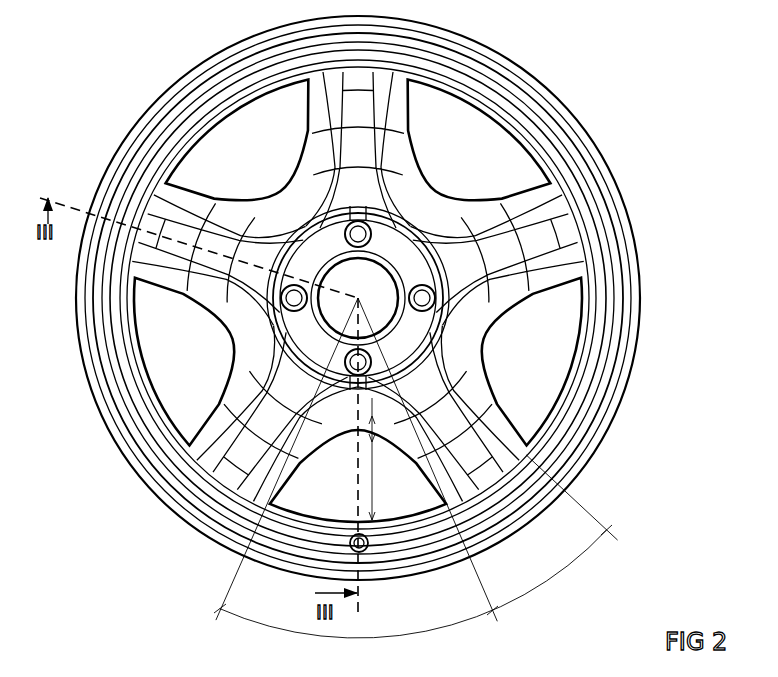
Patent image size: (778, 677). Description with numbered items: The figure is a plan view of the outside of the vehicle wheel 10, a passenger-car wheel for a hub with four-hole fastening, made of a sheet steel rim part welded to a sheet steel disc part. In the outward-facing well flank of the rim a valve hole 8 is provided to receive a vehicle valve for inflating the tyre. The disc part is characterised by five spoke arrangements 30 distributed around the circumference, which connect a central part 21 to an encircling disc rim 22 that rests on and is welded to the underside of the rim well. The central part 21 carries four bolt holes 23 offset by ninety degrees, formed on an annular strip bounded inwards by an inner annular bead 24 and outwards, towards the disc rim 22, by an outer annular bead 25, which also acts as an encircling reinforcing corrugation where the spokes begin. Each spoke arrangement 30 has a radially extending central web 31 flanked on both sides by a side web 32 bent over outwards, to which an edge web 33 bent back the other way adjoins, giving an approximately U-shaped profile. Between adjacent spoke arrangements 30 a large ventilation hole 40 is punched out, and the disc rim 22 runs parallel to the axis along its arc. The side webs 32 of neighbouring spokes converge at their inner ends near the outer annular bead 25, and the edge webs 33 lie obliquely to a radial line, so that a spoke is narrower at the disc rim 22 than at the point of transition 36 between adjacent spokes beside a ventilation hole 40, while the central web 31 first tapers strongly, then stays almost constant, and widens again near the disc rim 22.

The valve hole 8 is at (361, 552).
The vehicle wheel 10 is at (374, 320).
The central part 21 is at (360, 262).
The disc rim 22 is at (230, 103).
The bolt holes 23 is at (368, 222).
The inner annular bead 24 is at (360, 298).
The outer annular bead 25 is at (283, 340).
The spoke arrangements 30 is at (401, 268).
The central web 31 is at (359, 348).
The side web 32 is at (344, 348).
The edge web 33 is at (518, 200).
The point of transition 36 is at (282, 193).
The ventilation hole 40 is at (367, 268).